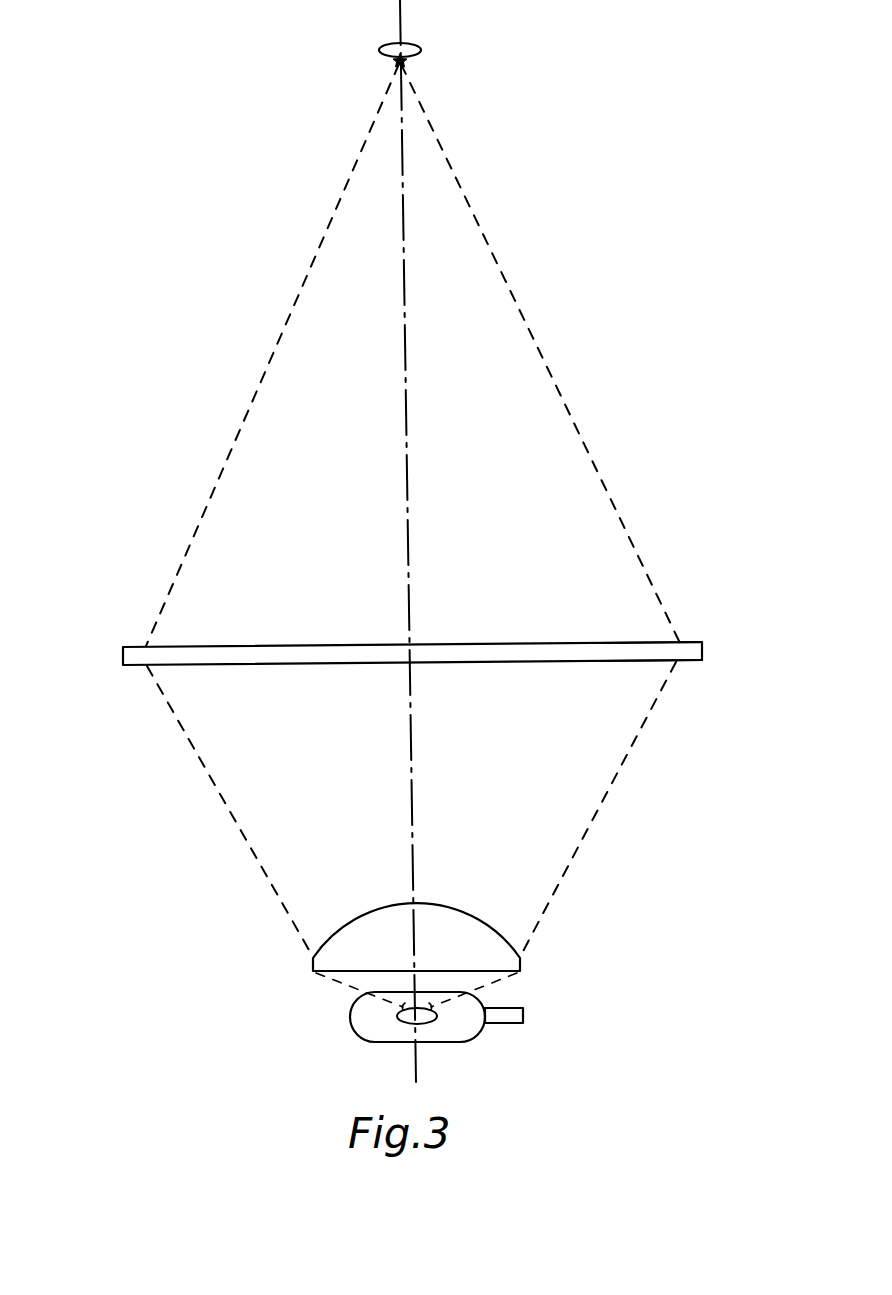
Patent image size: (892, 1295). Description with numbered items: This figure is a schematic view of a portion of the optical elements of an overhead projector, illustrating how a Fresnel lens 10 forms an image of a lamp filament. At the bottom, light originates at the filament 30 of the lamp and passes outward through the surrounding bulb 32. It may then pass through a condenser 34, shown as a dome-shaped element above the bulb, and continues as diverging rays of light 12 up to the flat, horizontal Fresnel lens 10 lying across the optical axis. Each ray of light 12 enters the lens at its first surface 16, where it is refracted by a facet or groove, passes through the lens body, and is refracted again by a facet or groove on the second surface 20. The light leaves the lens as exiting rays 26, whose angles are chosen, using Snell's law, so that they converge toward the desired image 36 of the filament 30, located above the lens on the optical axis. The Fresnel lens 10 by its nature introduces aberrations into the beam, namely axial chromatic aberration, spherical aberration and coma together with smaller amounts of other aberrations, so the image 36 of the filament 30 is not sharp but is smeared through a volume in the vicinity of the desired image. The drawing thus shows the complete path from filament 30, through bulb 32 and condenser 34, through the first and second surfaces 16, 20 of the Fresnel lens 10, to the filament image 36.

The Fresnel lens 10 is at (135, 645).
The ray of light 12 is at (222, 800).
The first surface 16 is at (688, 667).
The second surface 20 is at (688, 640).
The exiting ray 26 is at (249, 405).
The filament 30 is at (423, 1023).
The bulb 32 is at (353, 1032).
The condenser 34 is at (483, 921).
The image 36 is at (410, 43).